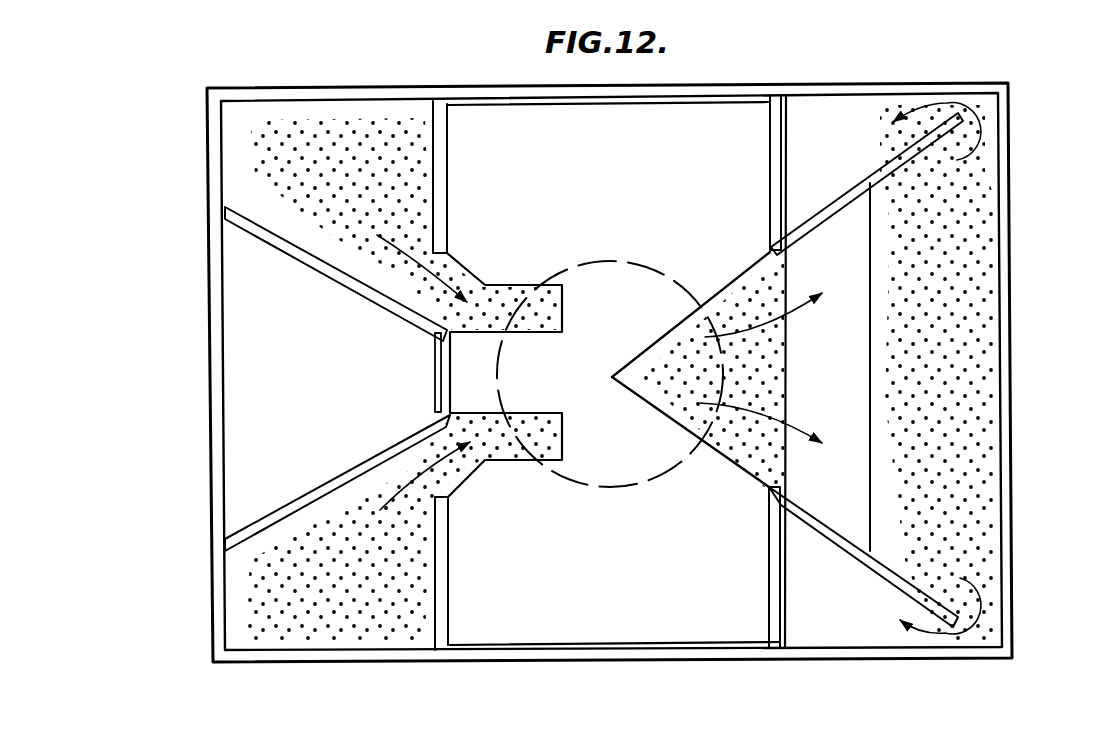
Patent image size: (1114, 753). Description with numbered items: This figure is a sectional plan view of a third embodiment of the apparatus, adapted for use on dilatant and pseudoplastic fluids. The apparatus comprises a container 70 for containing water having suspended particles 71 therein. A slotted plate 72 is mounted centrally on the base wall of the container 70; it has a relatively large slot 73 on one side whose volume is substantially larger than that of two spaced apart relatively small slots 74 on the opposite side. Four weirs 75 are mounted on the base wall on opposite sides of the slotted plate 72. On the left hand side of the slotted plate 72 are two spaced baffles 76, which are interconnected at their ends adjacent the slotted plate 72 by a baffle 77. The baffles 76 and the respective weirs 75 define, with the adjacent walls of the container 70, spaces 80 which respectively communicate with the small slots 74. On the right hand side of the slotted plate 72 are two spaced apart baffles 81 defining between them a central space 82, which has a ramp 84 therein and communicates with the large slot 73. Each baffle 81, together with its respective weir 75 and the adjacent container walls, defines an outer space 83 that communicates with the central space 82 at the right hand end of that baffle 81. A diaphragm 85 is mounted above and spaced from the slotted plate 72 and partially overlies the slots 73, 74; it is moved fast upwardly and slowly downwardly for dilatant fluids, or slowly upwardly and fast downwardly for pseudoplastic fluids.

The container 70 is at (1012, 80).
The suspended particles 71 is at (357, 162).
The slotted plate 72 is at (626, 171).
The relatively large slot 73 is at (735, 280).
The relatively small slots 74 is at (510, 302).
The weirs 75 is at (434, 191).
The baffles 76 is at (358, 287).
The baffle 77 is at (440, 371).
The spaces 80 is at (235, 178).
The baffles 81 is at (897, 160).
The central space 82 is at (992, 388).
The outer space 83 is at (848, 158).
The ramp 84 is at (848, 384).
The diaphragm 85 is at (658, 476).